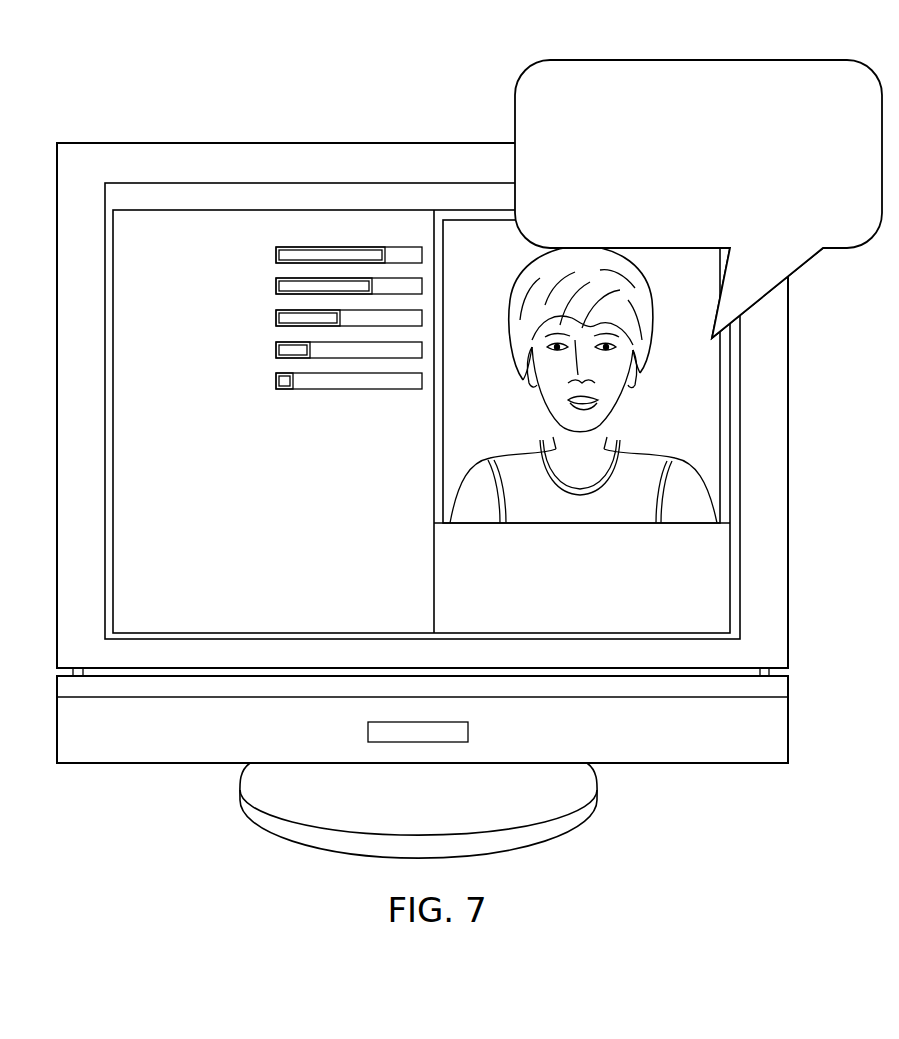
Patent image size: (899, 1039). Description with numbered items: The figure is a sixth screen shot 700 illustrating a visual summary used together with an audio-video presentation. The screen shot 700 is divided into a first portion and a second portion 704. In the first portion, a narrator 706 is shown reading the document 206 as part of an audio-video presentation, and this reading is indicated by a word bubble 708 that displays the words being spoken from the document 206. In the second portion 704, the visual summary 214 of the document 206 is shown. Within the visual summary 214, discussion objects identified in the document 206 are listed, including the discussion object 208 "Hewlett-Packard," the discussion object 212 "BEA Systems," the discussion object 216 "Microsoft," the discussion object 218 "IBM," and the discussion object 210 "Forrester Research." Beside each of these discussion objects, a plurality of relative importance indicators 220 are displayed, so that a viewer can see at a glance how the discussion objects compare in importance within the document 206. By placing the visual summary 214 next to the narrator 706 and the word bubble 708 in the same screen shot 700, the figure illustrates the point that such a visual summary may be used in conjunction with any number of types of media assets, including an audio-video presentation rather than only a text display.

The sixth screen shot 700 is at (432, 84).
The second portion 704 is at (279, 551).
The visual summary 214 is at (246, 440).
The relative importance indicators 220 is at (340, 224).
The discussion object 208 is at (153, 253).
The discussion object 212 is at (144, 293).
The discussion object 216 is at (210, 323).
The discussion object 218 is at (178, 355).
The discussion object 210 is at (156, 395).
The narrator 706 is at (640, 363).
The document 206 is at (698, 177).
The word bubble 708 is at (838, 250).